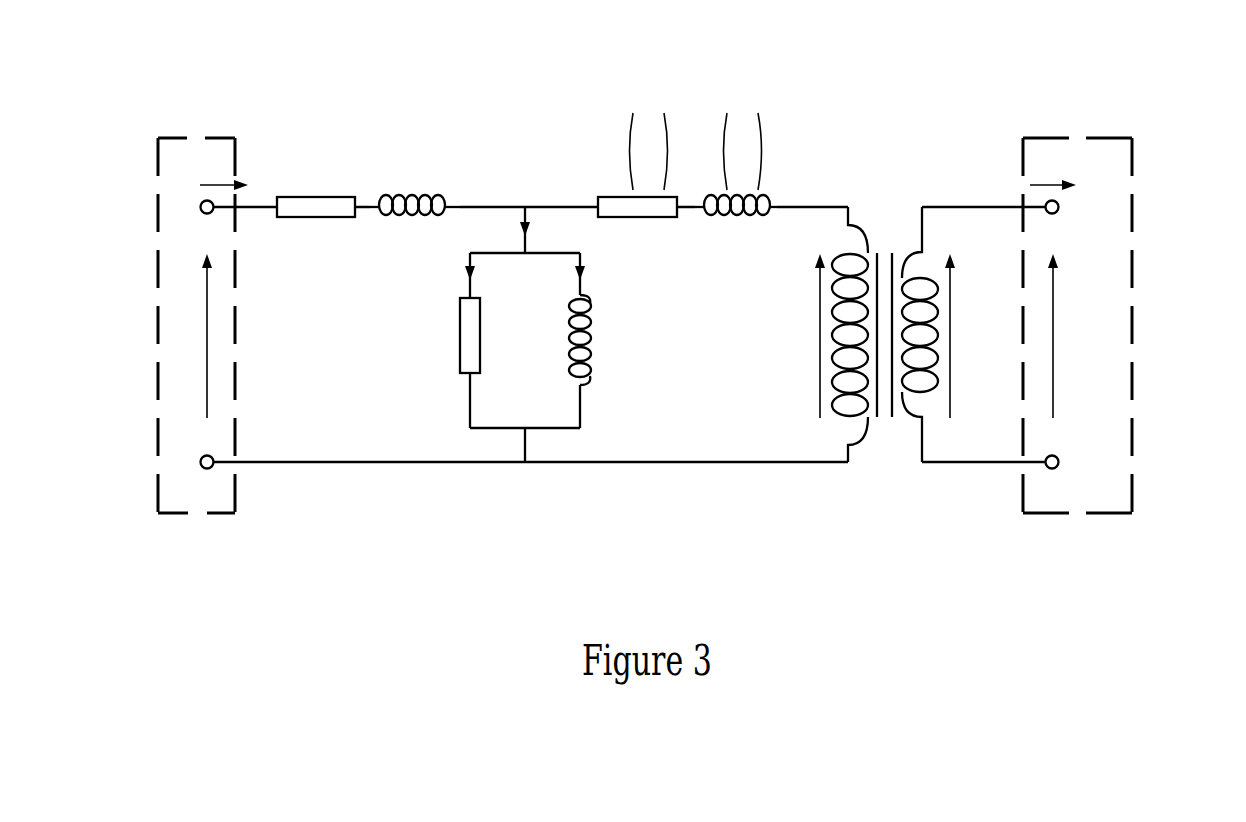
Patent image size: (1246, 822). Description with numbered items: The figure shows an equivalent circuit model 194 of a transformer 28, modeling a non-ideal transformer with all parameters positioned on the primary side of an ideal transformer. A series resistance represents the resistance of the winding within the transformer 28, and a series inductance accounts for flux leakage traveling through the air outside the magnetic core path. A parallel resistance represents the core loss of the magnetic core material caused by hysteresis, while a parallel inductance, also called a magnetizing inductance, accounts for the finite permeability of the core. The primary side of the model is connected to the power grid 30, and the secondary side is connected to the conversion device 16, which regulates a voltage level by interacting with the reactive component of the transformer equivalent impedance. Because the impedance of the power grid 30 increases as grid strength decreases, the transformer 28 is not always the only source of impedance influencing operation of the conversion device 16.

The equivalent circuit model 194 is at (822, 70).
The transformer 28 is at (904, 140).
The power grid 30 is at (237, 151).
The conversion device 16 is at (1135, 151).